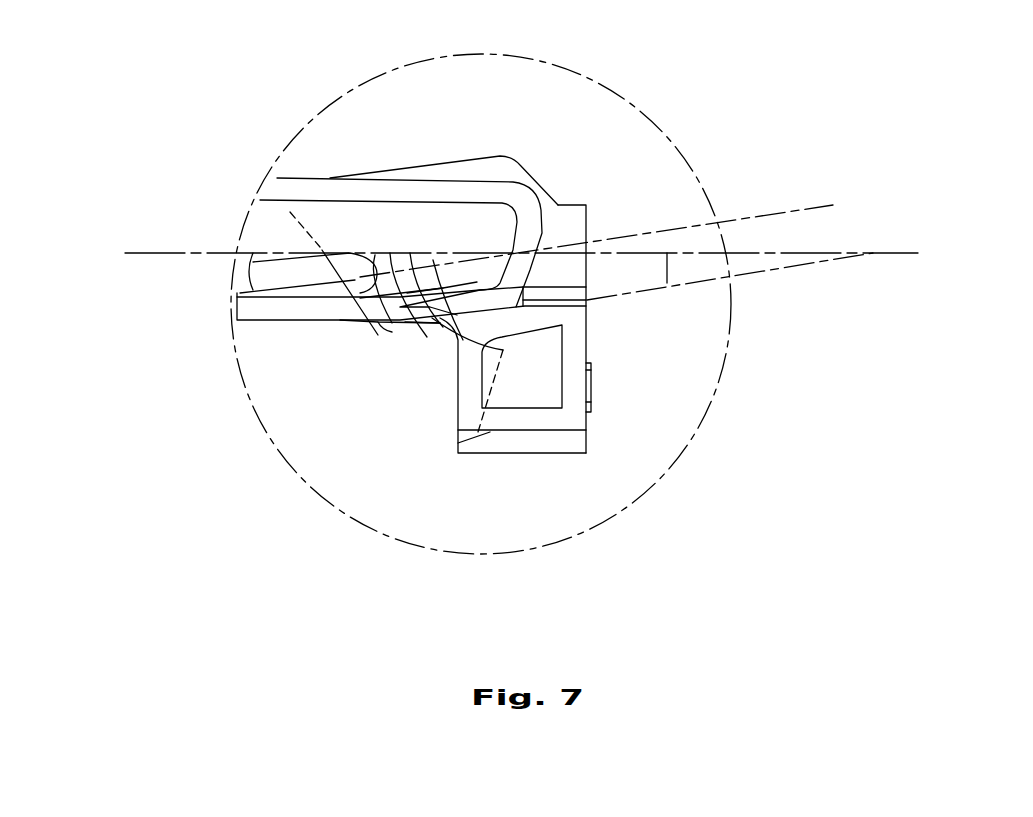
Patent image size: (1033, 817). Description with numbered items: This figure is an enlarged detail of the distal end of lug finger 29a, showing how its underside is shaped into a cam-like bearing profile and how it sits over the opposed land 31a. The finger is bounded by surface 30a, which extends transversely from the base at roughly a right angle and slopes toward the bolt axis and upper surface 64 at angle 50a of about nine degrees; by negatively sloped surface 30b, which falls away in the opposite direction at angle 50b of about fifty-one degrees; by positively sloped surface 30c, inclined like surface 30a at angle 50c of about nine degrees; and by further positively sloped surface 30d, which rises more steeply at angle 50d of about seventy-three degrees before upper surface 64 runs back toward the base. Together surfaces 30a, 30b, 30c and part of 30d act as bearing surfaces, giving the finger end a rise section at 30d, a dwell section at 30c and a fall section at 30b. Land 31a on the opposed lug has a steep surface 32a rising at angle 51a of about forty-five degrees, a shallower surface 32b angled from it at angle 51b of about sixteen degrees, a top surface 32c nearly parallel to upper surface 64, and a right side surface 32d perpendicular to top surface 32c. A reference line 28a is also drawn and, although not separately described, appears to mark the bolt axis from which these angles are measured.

The rotation axis 28a is at (530, 219).
The finger 29a is at (481, 304).
The surface 30a is at (364, 354).
The negatively sloped surface 30b is at (304, 407).
The positively sloped surface 30c is at (373, 461).
The further positively sloped surface 30d is at (596, 228).
The land 31a is at (625, 312).
The surface 32a is at (529, 476).
The surface 32b is at (567, 452).
The top surface 32c is at (662, 367).
The right side surface 32d is at (661, 380).
The angle 50a is at (207, 237).
The angle 50b is at (462, 185).
The angle 50c is at (740, 216).
The angle 50d is at (495, 209).
The angle 51a is at (289, 453).
The angle 51b is at (529, 186).
The upper surface 64 is at (470, 175).